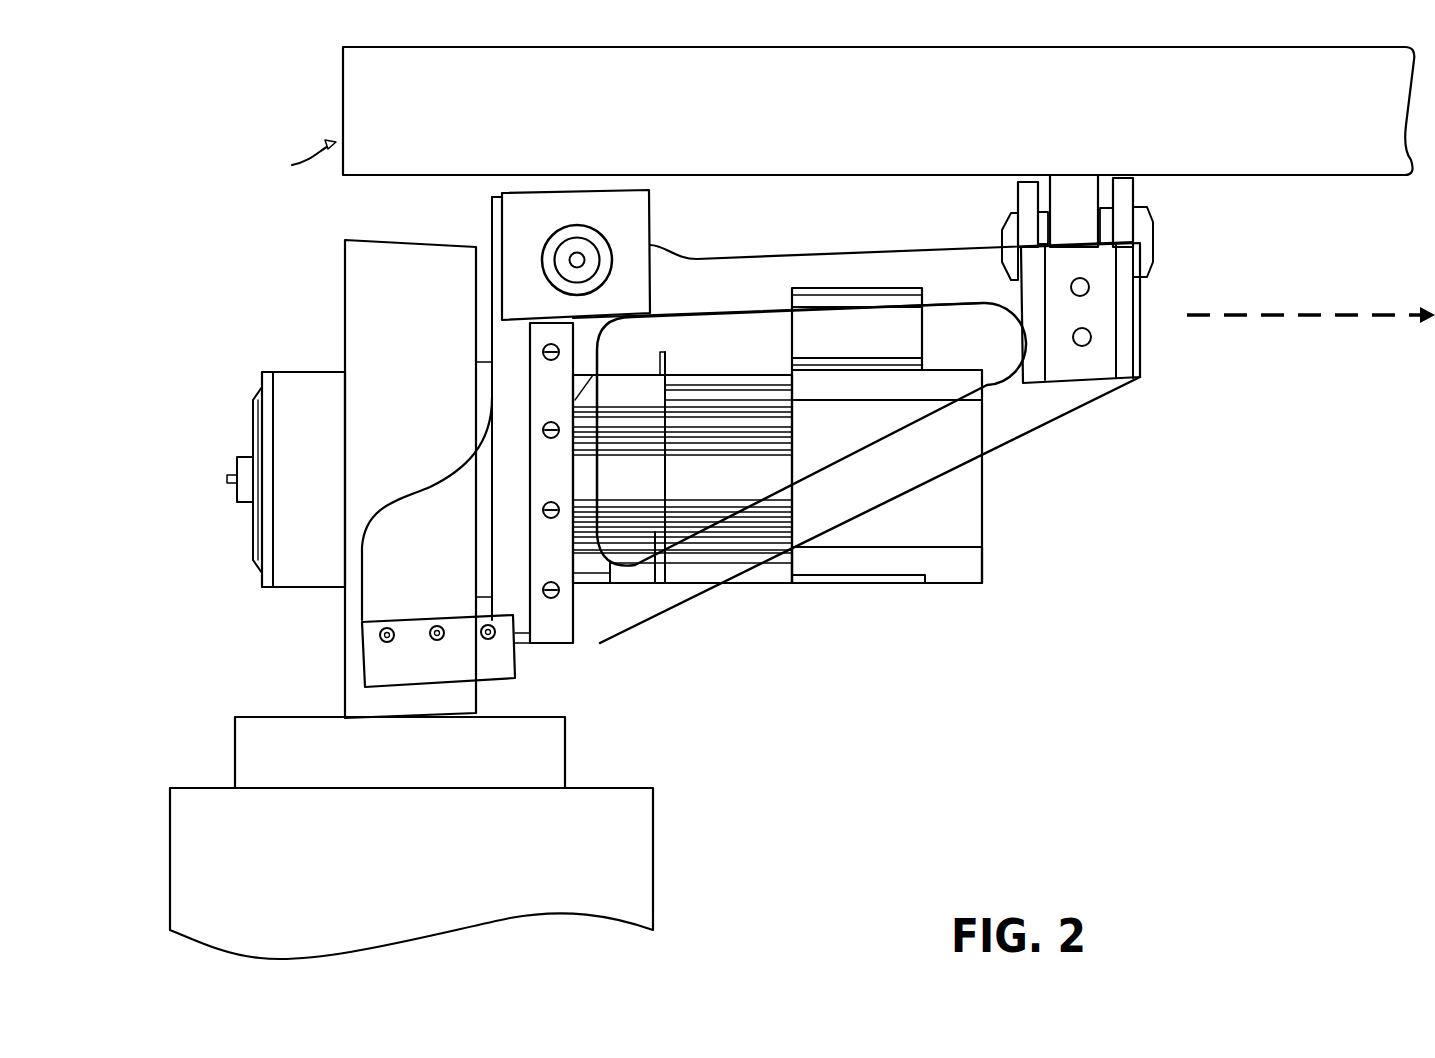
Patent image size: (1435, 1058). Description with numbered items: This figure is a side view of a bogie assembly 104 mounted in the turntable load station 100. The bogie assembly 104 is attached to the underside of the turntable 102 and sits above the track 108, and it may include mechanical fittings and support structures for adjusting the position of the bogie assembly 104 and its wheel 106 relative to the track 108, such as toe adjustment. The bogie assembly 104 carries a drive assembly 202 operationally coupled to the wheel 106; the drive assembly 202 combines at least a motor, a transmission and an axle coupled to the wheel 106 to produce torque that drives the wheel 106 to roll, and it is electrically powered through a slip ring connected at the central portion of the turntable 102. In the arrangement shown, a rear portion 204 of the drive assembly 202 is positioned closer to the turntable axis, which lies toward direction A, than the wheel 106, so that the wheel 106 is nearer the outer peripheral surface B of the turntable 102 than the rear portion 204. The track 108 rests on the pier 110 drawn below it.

The turntable load station 100 is at (174, 76).
The turntable 102 is at (343, 80).
The bogie assembly 104 is at (668, 614).
The wheel 106 is at (345, 297).
The track 108 is at (565, 758).
The pier 110 is at (653, 850).
The drive assembly 202 is at (968, 570).
The rear portion 204 is at (983, 507).